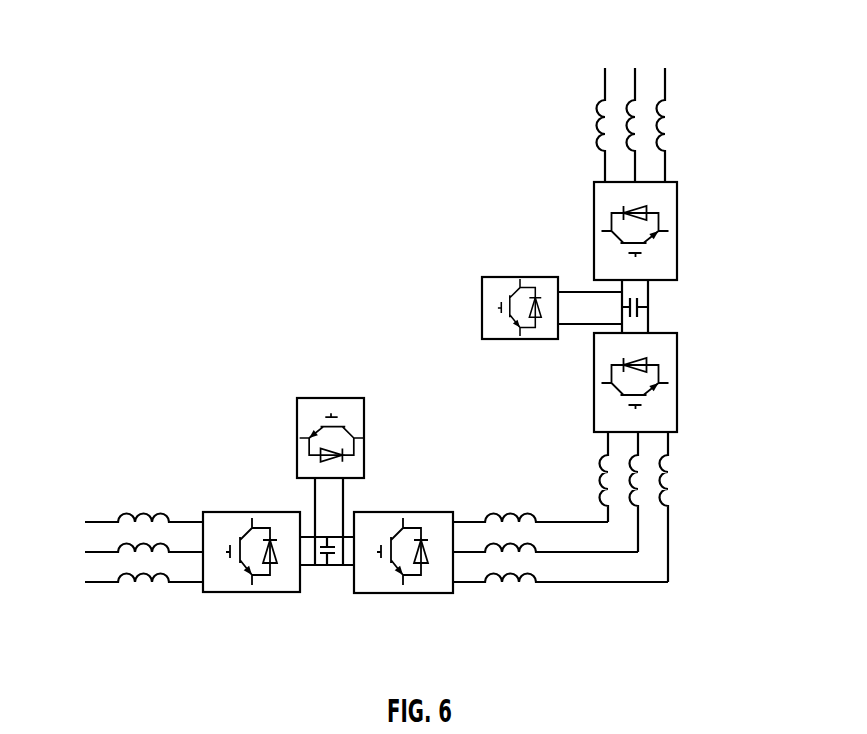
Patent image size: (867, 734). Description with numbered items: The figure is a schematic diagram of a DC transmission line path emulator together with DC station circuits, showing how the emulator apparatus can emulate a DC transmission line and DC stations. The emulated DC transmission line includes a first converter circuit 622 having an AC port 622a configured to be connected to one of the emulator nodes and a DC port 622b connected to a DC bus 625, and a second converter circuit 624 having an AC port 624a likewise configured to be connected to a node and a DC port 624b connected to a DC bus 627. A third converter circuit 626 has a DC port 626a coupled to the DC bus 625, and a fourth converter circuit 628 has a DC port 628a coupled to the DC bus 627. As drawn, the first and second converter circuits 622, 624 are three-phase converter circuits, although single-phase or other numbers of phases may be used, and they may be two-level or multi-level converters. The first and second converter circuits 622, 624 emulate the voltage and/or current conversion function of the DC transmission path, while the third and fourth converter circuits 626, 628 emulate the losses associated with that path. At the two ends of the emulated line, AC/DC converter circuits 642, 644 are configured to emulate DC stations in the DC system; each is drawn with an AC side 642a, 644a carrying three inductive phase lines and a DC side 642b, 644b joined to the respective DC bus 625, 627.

The first converter circuit 622 is at (465, 612).
The AC port 622a is at (547, 508).
The DC port 622b is at (352, 576).
The second converter circuit 624 is at (702, 432).
The AC port 624a is at (682, 525).
The DC port 624b is at (676, 323).
The DC bus 625 is at (335, 511).
The third converter circuit 626 is at (330, 398).
The DC port 626a is at (297, 494).
The DC bus 627 is at (659, 297).
The fourth converter circuit 628 is at (502, 277).
The DC port 628a is at (577, 338).
The AC/DC converter circuit 642 is at (192, 612).
The AC input lines with inductors 642a is at (52, 523).
The DC link connection of grid-side converter 642b is at (305, 576).
The AC/DC converter circuit 644 is at (717, 177).
The AC lines with inductors 644a is at (697, 73).
The DC link connection of converter 644b is at (678, 294).